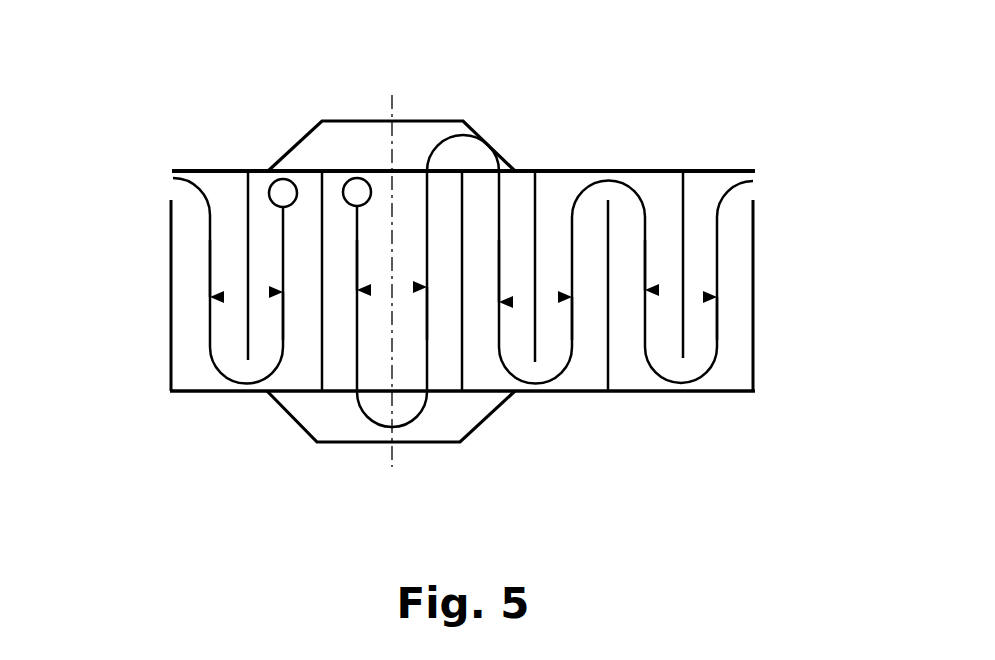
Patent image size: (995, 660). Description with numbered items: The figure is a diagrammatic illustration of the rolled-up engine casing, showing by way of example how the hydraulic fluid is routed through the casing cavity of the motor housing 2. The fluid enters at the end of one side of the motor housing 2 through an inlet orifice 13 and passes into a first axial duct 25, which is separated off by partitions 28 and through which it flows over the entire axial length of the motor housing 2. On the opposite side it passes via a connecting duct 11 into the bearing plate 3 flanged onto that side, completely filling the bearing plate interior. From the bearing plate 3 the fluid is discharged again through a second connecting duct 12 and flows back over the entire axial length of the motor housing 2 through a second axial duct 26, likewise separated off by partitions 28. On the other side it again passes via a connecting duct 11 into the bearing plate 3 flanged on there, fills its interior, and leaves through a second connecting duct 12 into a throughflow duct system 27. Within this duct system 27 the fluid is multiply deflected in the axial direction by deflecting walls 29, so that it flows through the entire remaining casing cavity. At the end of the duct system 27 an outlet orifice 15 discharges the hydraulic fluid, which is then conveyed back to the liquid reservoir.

The motor housing 2 is at (660, 170).
The bearing plate 3 is at (463, 121).
The connecting duct 11 is at (425, 171).
The second connecting duct 12 is at (513, 170).
The inlet orifice 13 is at (357, 178).
The outlet orifice 15 is at (283, 179).
The first axial duct 25 is at (333, 340).
The second axial duct 26 is at (442, 343).
The throughflow duct system 27 is at (585, 372).
The partitions 28 is at (318, 320).
The deflecting walls 29 is at (753, 344).